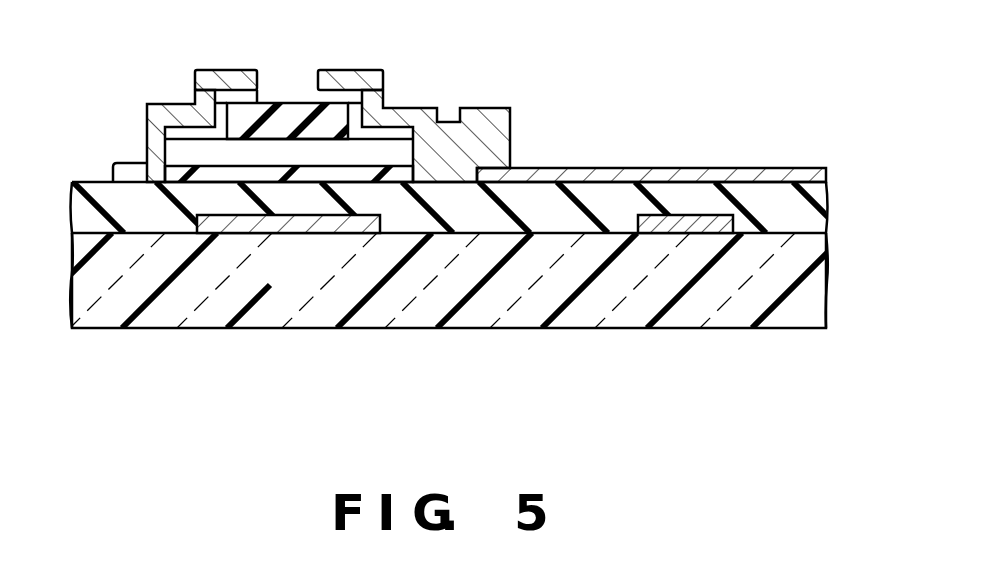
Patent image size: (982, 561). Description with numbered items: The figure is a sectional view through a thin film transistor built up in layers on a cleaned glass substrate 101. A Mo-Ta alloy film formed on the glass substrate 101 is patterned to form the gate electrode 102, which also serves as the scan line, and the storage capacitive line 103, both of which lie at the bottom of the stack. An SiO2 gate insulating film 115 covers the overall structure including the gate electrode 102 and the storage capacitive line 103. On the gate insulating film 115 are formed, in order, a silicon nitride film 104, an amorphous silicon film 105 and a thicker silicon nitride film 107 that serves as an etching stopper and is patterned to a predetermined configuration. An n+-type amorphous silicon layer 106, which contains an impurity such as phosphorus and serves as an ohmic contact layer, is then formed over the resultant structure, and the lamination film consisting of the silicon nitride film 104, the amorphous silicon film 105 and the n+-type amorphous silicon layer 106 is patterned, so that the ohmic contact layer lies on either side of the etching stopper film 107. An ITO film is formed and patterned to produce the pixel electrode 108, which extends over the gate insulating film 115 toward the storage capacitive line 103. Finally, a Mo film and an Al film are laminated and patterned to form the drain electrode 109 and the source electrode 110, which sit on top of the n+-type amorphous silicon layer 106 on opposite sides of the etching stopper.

The glass substrate 101 is at (818, 302).
The gate electrode 102 is at (311, 234).
The storage capacitive line 103 is at (692, 235).
The silicon nitride film 104 is at (165, 177).
The amorphous silicon film 105 is at (175, 152).
The n+-type amorphous silicon layer 106 is at (177, 131).
The silicon nitride film 107 is at (286, 108).
The pixel electrode 108 is at (570, 167).
The drain electrode 109 is at (219, 78).
The source electrode 110 is at (351, 81).
The gate insulating film 115 is at (813, 218).